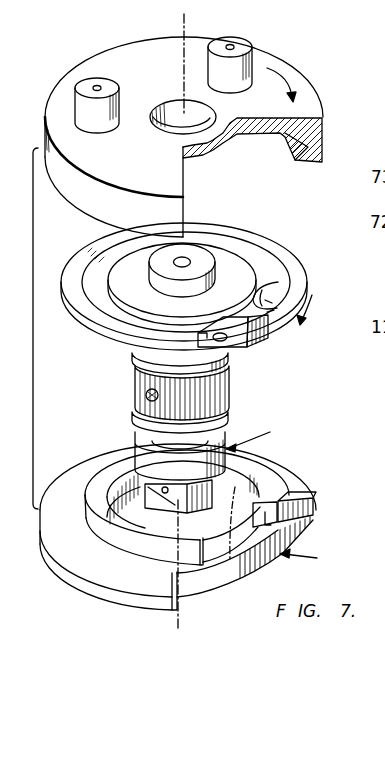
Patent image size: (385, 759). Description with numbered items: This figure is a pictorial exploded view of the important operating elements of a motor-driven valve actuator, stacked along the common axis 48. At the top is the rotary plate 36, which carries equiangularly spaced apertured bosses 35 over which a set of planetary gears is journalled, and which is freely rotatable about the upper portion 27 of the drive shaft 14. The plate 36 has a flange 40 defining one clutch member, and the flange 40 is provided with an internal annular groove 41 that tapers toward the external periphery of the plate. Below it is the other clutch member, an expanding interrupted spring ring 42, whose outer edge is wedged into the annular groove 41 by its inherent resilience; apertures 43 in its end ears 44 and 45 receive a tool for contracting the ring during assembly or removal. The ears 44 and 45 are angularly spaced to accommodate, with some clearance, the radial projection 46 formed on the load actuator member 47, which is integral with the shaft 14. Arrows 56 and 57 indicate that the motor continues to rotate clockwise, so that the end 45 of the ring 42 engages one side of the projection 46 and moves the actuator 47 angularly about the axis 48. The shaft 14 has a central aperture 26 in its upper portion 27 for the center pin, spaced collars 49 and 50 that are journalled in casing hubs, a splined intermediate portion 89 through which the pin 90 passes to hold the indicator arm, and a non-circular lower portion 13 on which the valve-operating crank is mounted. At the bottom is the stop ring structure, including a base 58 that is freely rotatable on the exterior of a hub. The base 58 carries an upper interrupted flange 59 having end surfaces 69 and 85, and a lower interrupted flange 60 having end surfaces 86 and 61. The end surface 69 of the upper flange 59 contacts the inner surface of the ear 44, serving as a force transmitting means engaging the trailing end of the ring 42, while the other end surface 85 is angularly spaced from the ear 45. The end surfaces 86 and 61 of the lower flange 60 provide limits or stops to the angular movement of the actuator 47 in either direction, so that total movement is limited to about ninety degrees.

The non-circular lower portion 13 is at (194, 506).
The drive shaft 14 is at (212, 449).
The central aperture 26 is at (186, 258).
The upper portion 27 is at (207, 258).
The apertured boss 35 is at (244, 63).
The rotary plate 36 is at (287, 70).
The flange 40 is at (323, 155).
The internal annular groove 41 is at (295, 148).
The spring ring 42 is at (262, 242).
The apertures 43 is at (270, 318).
The end ear 44 is at (210, 332).
The end ear 45 is at (258, 306).
The radial projection 46 is at (256, 322).
The load actuator member 47 is at (120, 258).
The axis 48 is at (183, 34).
The collar 49 is at (140, 420).
The collar 50 is at (140, 360).
The arrow 56 is at (289, 83).
The arrow 57 is at (313, 308).
The base 58 is at (190, 522).
The upper interrupted flange 59 is at (250, 465).
The lower interrupted flange 60 is at (80, 555).
The end surface 61 is at (314, 505).
The end surface 69 is at (205, 542).
The end surface 85 is at (273, 524).
The end surface 86 is at (176, 605).
The intermediate portion 89 is at (137, 377).
The pin 90 is at (146, 394).